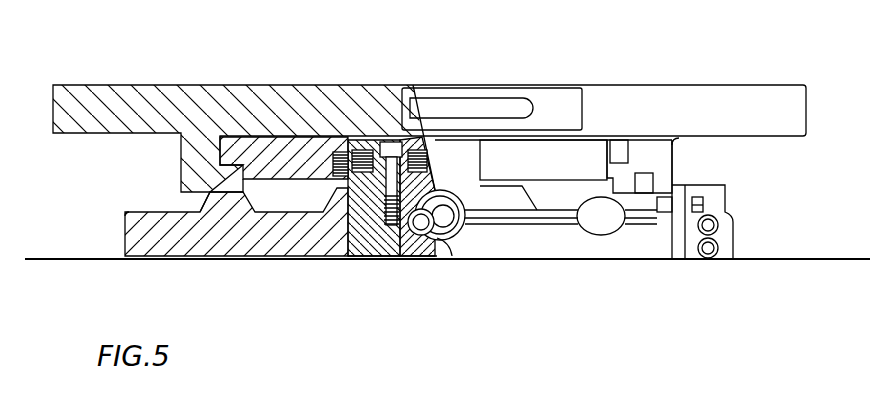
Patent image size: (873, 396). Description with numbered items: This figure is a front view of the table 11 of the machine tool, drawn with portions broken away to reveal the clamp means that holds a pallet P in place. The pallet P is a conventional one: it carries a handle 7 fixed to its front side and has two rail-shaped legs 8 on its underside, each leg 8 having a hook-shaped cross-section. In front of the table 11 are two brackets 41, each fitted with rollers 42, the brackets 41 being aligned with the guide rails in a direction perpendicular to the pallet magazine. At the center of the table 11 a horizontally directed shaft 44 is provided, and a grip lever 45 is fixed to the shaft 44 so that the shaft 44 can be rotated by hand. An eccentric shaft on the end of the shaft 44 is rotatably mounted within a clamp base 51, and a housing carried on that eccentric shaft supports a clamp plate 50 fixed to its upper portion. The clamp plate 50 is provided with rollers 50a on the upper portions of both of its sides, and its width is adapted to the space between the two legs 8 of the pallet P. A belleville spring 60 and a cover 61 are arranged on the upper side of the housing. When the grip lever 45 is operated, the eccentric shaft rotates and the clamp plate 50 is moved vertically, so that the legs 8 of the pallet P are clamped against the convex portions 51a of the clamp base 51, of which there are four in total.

The pallet P is at (117, 97).
The handle 7 is at (556, 104).
The leg 8 is at (662, 157).
The table 11 is at (781, 211).
The bracket 41 is at (685, 243).
The roller 42 is at (666, 214).
The shaft 44 is at (453, 238).
The grip lever 45 is at (383, 278).
The clamp plate 50 is at (253, 147).
The roller 50a is at (622, 138).
The clamp base 51 is at (130, 237).
The convex portion 51a is at (203, 210).
The belleville spring 60 is at (360, 140).
The cover 61 is at (370, 140).